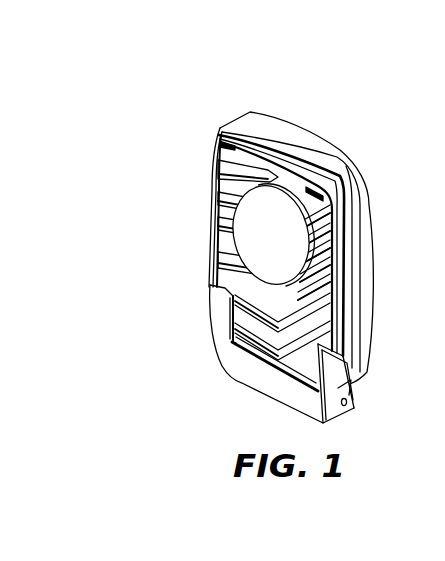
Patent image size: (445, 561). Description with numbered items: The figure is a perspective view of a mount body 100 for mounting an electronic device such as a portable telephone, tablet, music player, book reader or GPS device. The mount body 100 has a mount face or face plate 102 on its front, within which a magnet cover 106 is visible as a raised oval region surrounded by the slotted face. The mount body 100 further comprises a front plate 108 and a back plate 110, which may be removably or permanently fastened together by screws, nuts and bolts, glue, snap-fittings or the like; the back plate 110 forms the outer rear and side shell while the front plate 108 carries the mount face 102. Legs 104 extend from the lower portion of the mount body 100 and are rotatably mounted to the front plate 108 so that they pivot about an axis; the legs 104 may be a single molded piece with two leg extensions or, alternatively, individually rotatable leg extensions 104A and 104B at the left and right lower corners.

The mount body 100 is at (141, 174).
The mount face 102 is at (218, 222).
The legs 104 is at (241, 382).
The leg extension 104A is at (217, 311).
The leg extension 104B is at (333, 374).
The magnet cover 106 is at (262, 207).
The front plate 108 is at (220, 128).
The back plate 110 is at (246, 112).